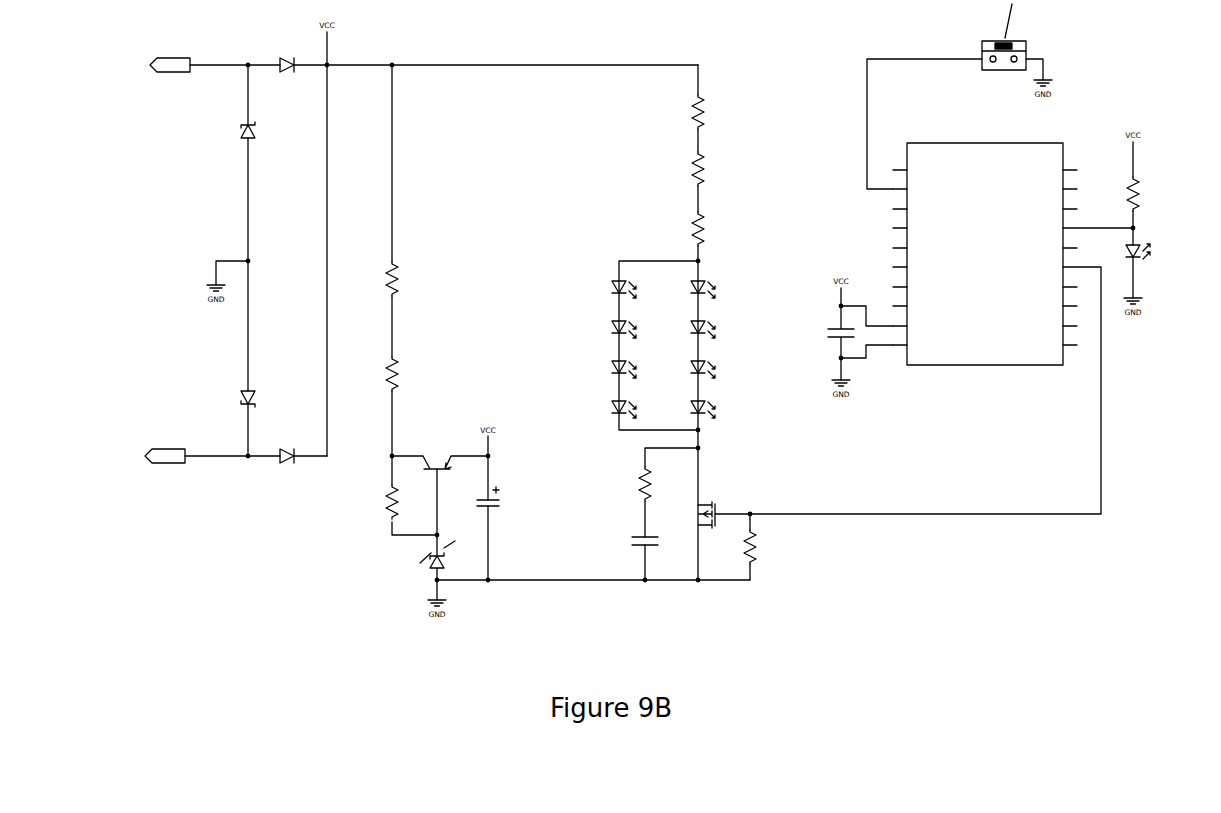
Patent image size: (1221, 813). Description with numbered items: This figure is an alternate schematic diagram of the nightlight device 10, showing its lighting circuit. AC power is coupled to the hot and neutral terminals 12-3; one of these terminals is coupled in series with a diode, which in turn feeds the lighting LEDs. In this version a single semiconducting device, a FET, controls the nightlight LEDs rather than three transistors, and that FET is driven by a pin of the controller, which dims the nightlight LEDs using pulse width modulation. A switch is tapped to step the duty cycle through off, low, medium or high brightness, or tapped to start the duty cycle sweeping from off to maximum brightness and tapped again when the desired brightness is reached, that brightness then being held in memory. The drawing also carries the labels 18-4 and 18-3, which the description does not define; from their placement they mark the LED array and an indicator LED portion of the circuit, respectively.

The nightlight device 10 is at (301, 599).
The hot and neutral terminals 12-3 is at (167, 250).
The LED array 18-4 is at (582, 254).
The indicator LED 18-3 is at (1152, 268).